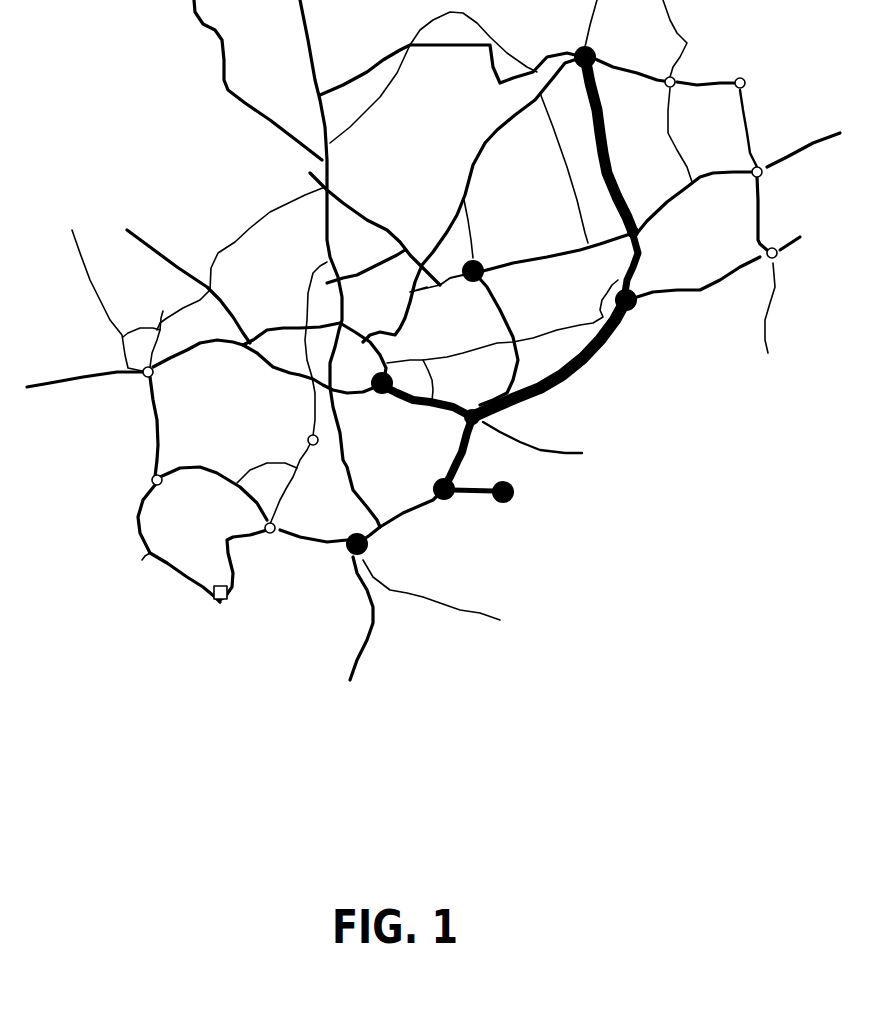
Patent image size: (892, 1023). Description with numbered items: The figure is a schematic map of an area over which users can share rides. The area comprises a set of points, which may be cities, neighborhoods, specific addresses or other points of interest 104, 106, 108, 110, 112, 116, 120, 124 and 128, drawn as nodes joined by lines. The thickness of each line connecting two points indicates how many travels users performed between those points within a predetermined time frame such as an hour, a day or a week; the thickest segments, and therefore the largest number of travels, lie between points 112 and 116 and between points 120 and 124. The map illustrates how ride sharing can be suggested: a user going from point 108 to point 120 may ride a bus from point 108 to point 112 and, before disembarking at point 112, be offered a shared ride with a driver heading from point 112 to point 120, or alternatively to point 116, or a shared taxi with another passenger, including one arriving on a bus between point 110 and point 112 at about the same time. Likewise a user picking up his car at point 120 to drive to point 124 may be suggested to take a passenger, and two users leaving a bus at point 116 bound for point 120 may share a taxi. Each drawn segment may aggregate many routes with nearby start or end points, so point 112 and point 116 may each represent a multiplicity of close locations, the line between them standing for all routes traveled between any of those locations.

The point of interest 104 is at (383, 542).
The point of interest 106 is at (528, 485).
The point of interest 108 is at (468, 480).
The point of interest 110 is at (365, 372).
The point of interest 112 is at (502, 419).
The point of interest 116 is at (654, 308).
The point of interest 120 is at (646, 213).
The point of interest 124 is at (605, 44).
The point of interest 128 is at (492, 257).